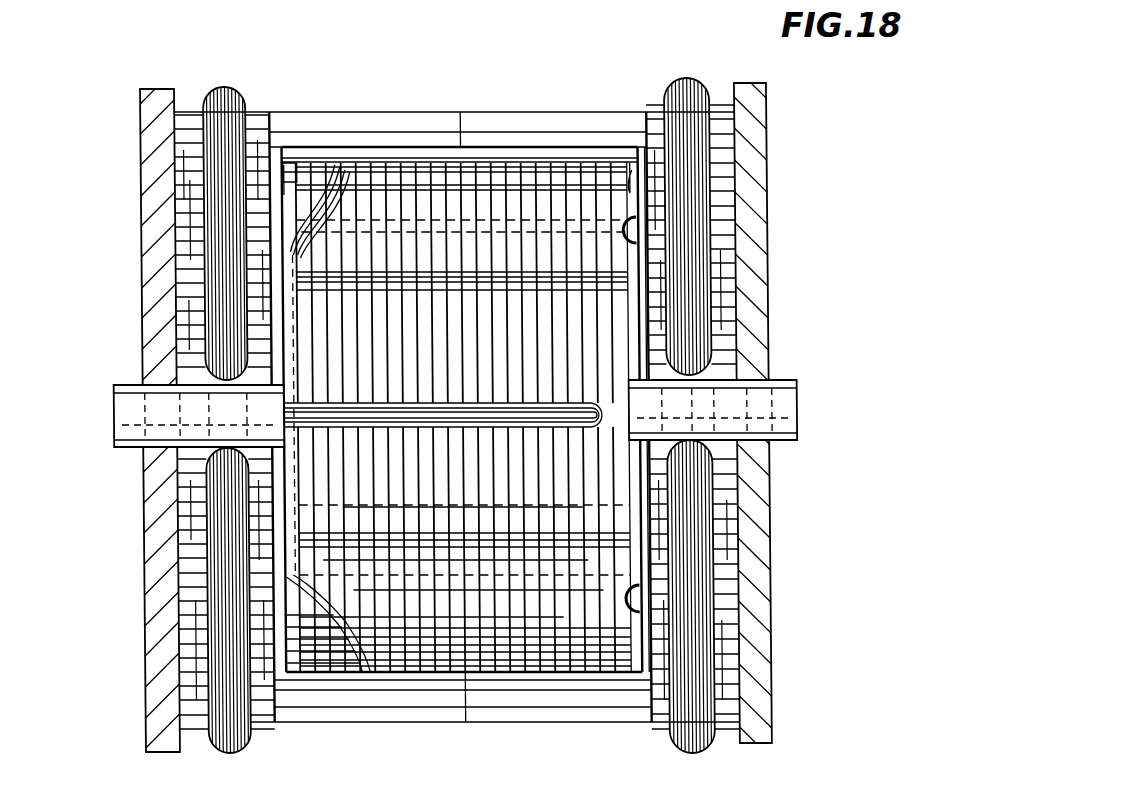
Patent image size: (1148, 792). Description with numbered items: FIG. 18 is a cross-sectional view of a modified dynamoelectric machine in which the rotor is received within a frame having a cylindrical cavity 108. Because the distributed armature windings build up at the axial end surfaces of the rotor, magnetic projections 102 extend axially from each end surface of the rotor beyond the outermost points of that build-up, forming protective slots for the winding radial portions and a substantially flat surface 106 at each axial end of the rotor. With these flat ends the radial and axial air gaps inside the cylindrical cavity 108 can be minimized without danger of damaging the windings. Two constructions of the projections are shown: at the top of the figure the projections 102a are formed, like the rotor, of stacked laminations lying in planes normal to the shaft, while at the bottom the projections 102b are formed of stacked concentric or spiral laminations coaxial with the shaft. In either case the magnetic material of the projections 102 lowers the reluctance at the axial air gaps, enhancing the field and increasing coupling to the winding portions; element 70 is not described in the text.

The shaft 70 is at (222, 90).
The magnetic projections 102 is at (303, 165).
The projections formed of stacked laminations 102a is at (325, 168).
The projections formed of stacked concentric laminations 102b is at (318, 657).
The substantially flat surface 106 is at (282, 193).
The cylindrical cavity 108 is at (636, 293).